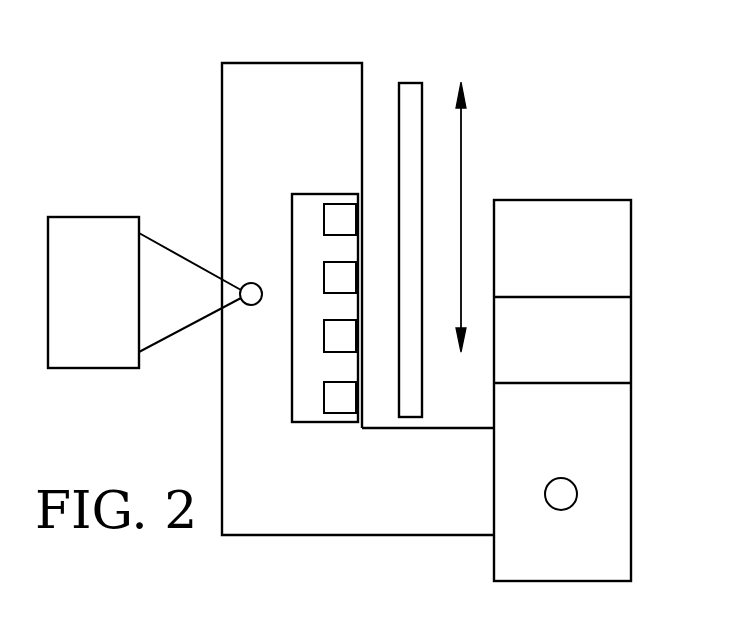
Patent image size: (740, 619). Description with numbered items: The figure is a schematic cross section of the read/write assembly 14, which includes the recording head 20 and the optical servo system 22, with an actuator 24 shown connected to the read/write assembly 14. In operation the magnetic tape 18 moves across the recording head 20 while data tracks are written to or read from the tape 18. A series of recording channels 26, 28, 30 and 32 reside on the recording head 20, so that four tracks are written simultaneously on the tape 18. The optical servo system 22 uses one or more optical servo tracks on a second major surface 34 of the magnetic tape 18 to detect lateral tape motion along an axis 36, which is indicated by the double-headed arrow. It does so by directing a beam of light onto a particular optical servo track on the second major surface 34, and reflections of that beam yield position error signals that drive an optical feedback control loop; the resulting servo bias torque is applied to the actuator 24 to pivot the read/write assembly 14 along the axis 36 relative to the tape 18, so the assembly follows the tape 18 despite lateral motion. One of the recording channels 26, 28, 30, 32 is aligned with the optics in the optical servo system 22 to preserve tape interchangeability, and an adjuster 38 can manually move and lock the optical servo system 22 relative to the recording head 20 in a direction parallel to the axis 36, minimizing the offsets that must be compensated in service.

The read/write assembly 14 is at (630, 158).
The magnetic tape 18 is at (411, 82).
The recording head 20 is at (312, 423).
The optical servo system 22 is at (617, 338).
The actuator 24 is at (97, 216).
The recording channel 26 is at (340, 210).
The recording channel 28 is at (327, 280).
The recording channel 30 is at (332, 337).
The recording channel 32 is at (332, 395).
The second major surface 34 is at (422, 107).
The axis 36 is at (463, 153).
The adjuster 38 is at (554, 480).